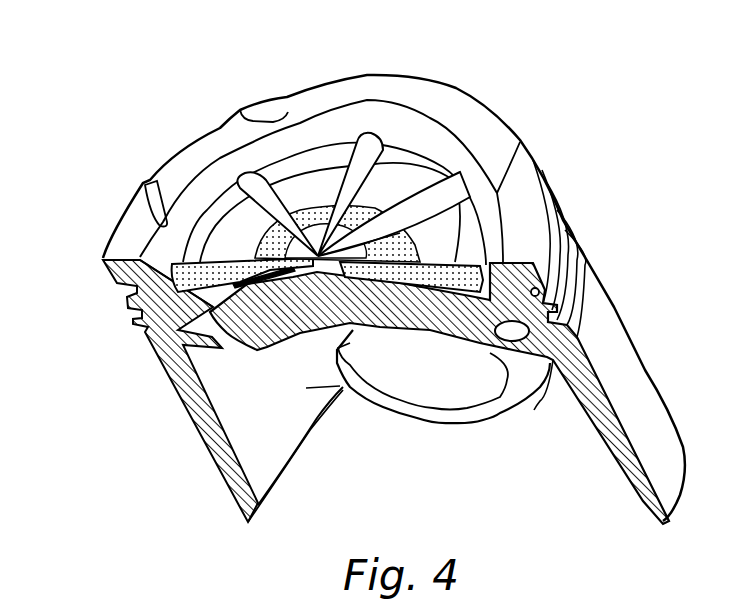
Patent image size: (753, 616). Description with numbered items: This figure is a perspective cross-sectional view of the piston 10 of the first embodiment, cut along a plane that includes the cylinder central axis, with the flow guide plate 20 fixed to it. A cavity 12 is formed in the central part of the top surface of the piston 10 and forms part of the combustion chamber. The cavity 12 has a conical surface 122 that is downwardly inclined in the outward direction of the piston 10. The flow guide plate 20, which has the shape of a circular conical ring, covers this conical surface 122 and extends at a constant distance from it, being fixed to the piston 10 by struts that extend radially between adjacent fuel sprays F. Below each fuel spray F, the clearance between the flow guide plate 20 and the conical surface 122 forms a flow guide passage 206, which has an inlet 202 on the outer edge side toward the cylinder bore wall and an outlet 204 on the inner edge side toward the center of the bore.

The piston 10 is at (160, 112).
The cavity 12 is at (323, 182).
The flow guide plate 20 is at (345, 237).
The fuel spray F is at (178, 263).
The conical surface 122 is at (395, 322).
The inlet 202 is at (210, 315).
The outlet 204 is at (313, 325).
The flow guide passage 206 is at (272, 282).